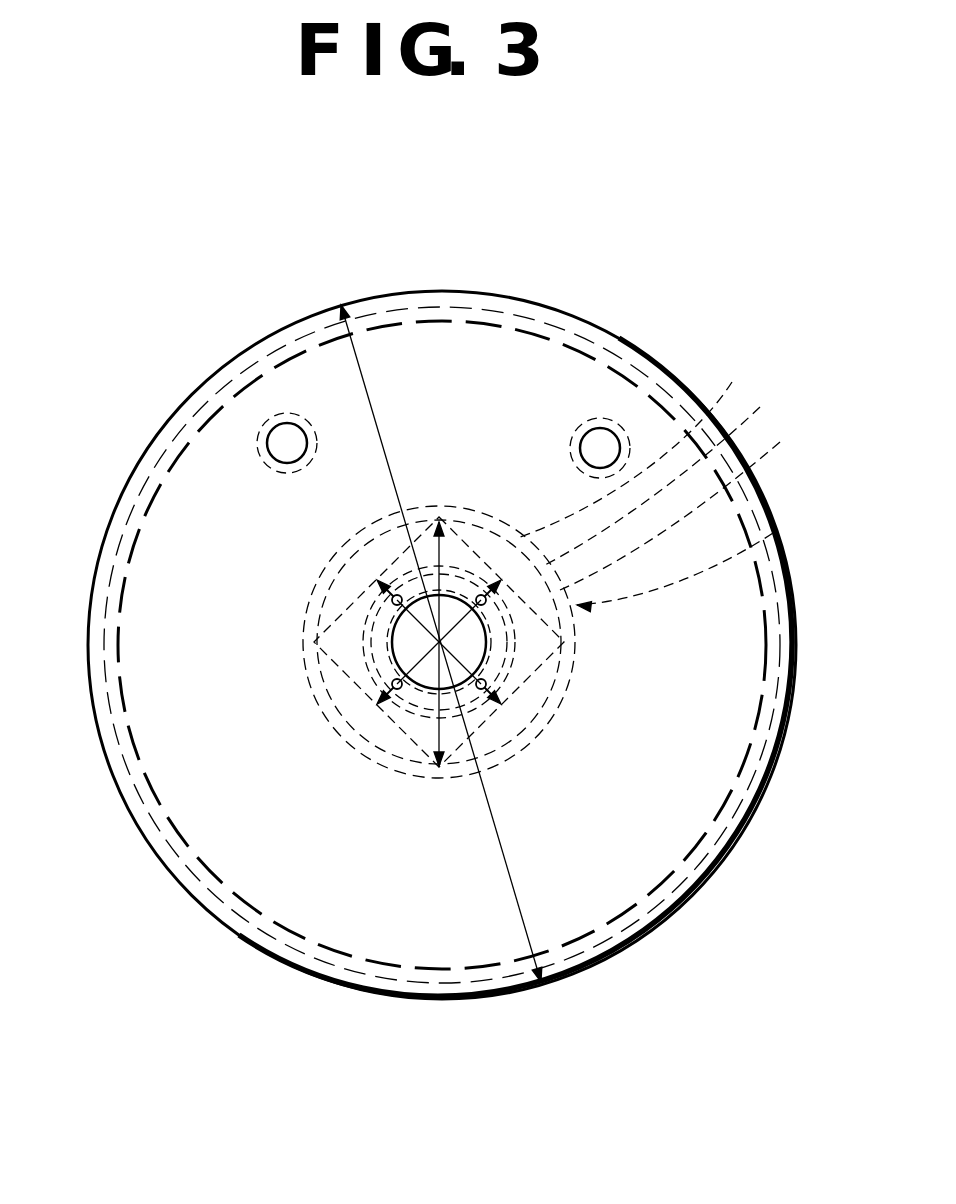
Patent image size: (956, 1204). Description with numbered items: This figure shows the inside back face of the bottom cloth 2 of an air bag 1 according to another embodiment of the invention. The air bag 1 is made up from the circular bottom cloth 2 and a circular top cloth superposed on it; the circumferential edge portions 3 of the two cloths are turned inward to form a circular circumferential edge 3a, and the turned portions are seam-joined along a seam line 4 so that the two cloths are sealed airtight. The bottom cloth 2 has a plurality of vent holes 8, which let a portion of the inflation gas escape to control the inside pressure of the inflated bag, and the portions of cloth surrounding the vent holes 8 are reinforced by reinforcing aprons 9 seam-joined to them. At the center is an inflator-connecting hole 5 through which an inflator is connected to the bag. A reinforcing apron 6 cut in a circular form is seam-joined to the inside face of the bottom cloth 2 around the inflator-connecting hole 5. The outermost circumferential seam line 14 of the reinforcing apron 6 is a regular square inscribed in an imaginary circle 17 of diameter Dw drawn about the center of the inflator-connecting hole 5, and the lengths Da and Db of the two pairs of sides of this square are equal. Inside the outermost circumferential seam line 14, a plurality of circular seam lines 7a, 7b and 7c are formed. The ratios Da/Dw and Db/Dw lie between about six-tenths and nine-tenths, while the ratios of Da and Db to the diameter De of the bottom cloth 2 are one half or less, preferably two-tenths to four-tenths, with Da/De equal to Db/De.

The air bag 1 is at (203, 258).
The bottom cloth 2 is at (457, 326).
The circumferential edge portions 3 is at (288, 950).
The circular circumferential edge 3a is at (215, 918).
The seam line 4 is at (123, 802).
The inflator-connecting hole 5 is at (427, 678).
The reinforcing apron 6 is at (773, 533).
The circular seam line 7a is at (641, 441).
The circular seam line 7b is at (674, 472).
The circular seam line 7c is at (691, 503).
The vent holes 8 is at (280, 437).
The reinforcing aprons 9 is at (260, 432).
The outermost circumferential seam line 14 is at (393, 598).
The imaginary circle 17 is at (480, 508).
The diameter of imaginary circle Dw is at (421, 545).
The side length of square Da is at (462, 653).
The side length of square Db is at (417, 653).
The diameter of bottom cloth De is at (527, 912).